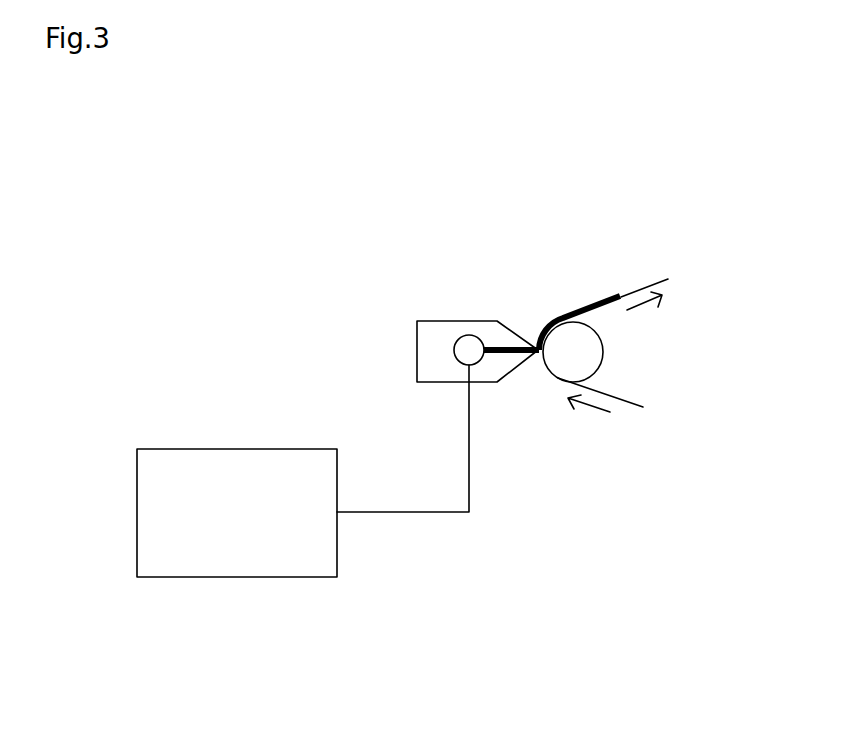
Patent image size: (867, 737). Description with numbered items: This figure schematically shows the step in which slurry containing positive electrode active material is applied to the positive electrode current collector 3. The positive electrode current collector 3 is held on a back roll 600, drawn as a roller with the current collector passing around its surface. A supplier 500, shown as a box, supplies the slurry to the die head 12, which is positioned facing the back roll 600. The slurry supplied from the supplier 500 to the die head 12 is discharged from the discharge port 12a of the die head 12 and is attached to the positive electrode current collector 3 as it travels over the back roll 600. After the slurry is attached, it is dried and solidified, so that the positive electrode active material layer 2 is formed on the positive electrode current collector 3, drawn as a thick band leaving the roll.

The die head 12 is at (450, 327).
The discharge port 12a is at (538, 347).
The positive electrode active material layer 2 is at (557, 318).
The back roll 600 is at (583, 352).
The positive electrode current collector 3 is at (627, 407).
The supplier 500 is at (272, 577).